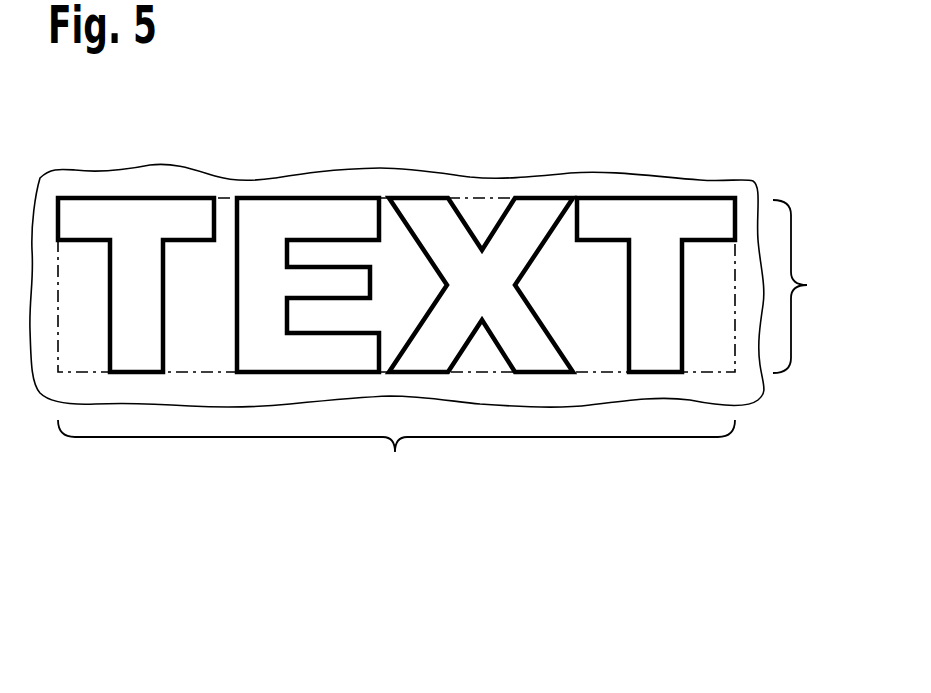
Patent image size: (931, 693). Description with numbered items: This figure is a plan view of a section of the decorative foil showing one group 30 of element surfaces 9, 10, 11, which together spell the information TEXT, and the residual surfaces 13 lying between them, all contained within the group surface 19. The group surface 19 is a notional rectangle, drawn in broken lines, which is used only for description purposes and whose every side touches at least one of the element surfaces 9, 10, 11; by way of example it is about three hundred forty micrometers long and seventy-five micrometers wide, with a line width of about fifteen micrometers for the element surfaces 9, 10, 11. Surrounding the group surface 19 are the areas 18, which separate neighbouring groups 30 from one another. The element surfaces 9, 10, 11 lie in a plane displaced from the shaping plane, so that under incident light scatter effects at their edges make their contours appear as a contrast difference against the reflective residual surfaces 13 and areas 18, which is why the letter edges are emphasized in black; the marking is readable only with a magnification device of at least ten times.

The element surface 9 is at (185, 215).
The element surface 10 is at (328, 216).
The element surface 11 is at (525, 217).
The residual surface 13 is at (712, 353).
The area 18 is at (744, 192).
The group surface 19 is at (809, 286).
The group 30 is at (396, 459).